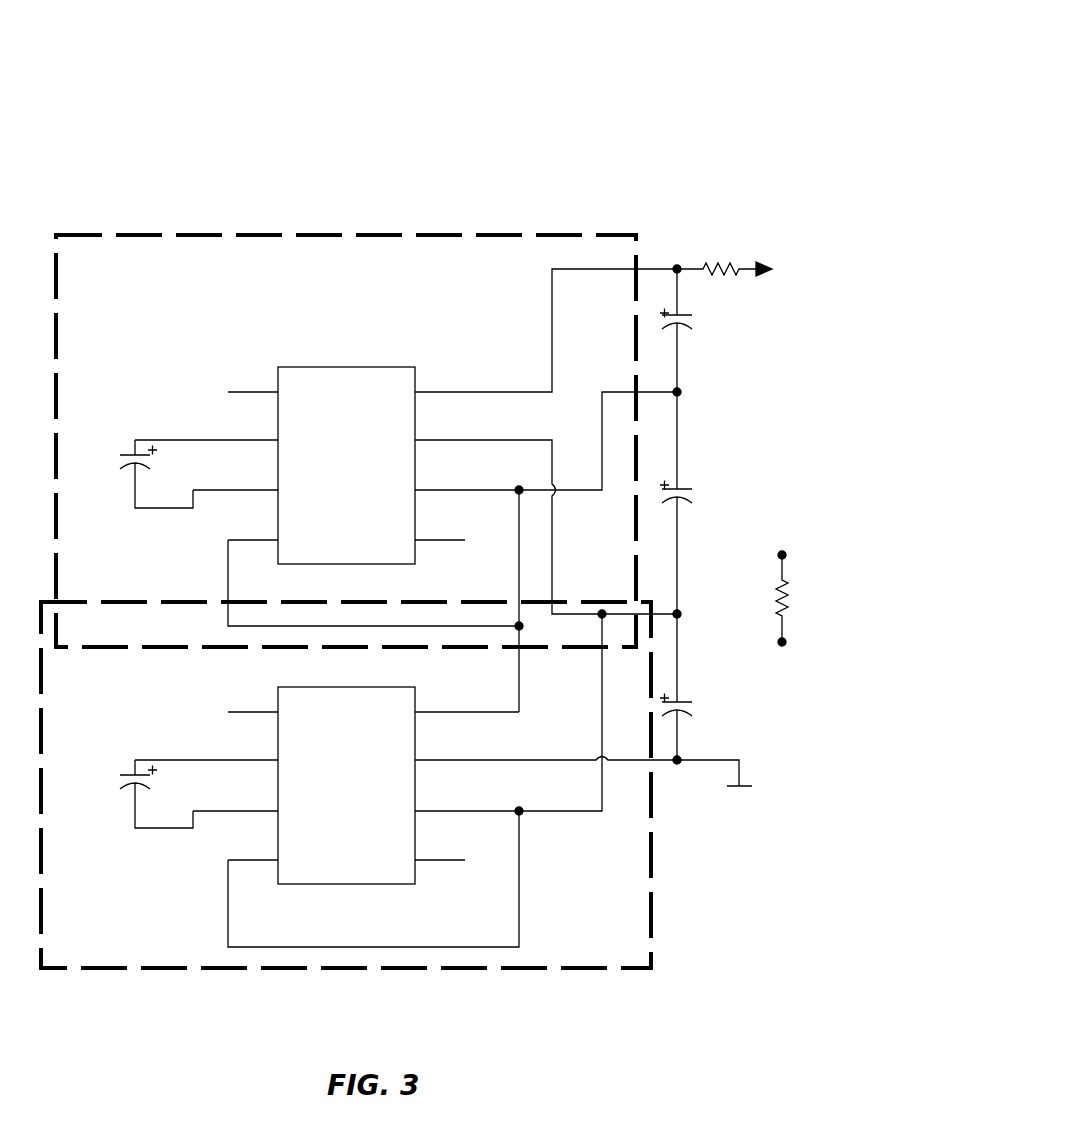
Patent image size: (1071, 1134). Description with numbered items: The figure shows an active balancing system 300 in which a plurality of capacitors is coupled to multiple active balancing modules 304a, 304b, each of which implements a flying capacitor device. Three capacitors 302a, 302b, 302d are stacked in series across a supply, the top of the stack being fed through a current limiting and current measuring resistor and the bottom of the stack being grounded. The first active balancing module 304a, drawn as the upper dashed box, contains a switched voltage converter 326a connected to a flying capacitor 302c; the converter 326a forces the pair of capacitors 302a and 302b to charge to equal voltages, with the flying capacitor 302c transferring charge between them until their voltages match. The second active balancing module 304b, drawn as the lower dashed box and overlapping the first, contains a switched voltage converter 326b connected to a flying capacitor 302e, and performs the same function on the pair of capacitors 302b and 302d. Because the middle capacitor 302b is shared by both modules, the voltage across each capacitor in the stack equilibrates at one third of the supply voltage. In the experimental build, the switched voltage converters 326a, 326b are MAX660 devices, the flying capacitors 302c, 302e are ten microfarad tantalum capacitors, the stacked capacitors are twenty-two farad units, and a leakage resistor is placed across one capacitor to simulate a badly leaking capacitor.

The active balancing system 300 is at (660, 88).
The capacitor 302a is at (706, 308).
The capacitor 302b is at (706, 483).
The flying capacitor 302c is at (131, 454).
The capacitor 302d is at (706, 695).
The flying capacitor 302e is at (131, 774).
The active balancing module 304a is at (636, 235).
The active balancing module 304b is at (651, 893).
The switched voltage converter 326a is at (343, 367).
The switched voltage converter 326b is at (343, 687).